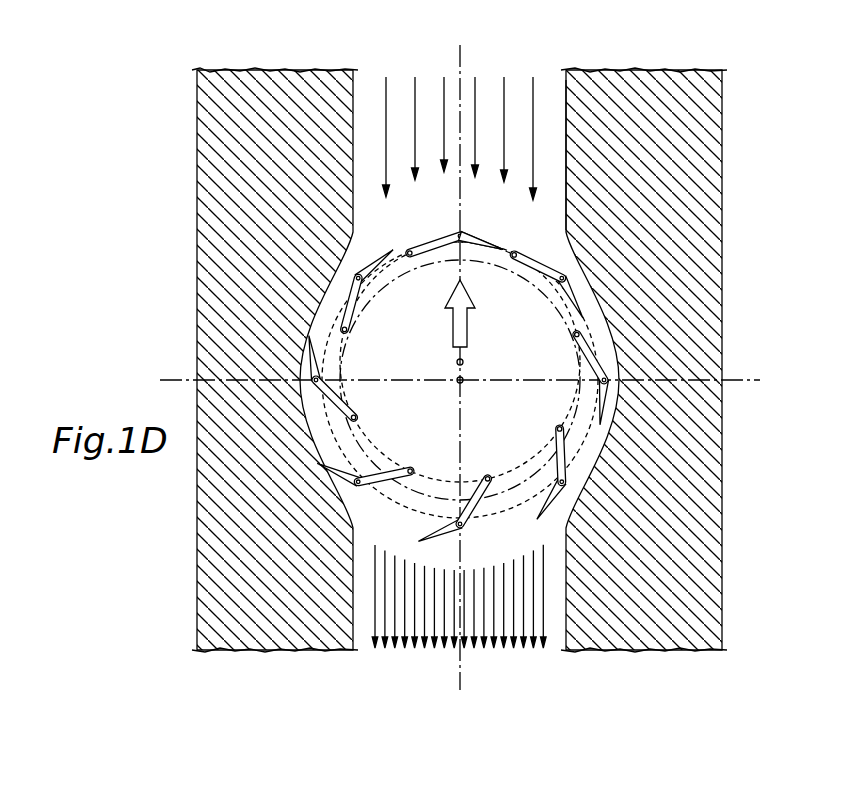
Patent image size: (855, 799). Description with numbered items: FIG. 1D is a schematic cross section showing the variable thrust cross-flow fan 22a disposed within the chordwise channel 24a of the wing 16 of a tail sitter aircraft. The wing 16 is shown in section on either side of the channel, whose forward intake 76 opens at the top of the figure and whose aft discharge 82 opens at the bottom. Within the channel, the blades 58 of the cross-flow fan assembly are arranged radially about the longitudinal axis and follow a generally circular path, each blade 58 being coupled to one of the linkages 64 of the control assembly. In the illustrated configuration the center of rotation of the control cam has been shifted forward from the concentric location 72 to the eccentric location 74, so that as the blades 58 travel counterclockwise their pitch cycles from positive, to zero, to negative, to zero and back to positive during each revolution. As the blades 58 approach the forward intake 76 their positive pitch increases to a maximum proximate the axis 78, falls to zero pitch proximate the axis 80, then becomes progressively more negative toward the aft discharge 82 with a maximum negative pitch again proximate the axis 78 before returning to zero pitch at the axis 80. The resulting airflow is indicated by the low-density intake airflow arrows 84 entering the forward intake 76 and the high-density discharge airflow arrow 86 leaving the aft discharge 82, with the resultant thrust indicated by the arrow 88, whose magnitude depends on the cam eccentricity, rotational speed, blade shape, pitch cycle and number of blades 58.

The wing 16 is at (197, 157).
The axis 78 is at (460, 65).
The axis 80 is at (183, 378).
The low-density intake airflow arrows 84 is at (415, 88).
The chordwise channel 24a is at (565, 97).
The forward intake 76 is at (471, 202).
The aft discharge 82 is at (471, 557).
The high-density discharge airflow arrow 86 is at (376, 610).
The eccentric location 74 is at (456, 362).
The concentric location 72 is at (462, 383).
The thrust arrow 88 is at (469, 327).
The linkages 64 is at (420, 247).
The blades 58 is at (465, 235).
The variable thrust cross-flow fan 22a is at (542, 249).